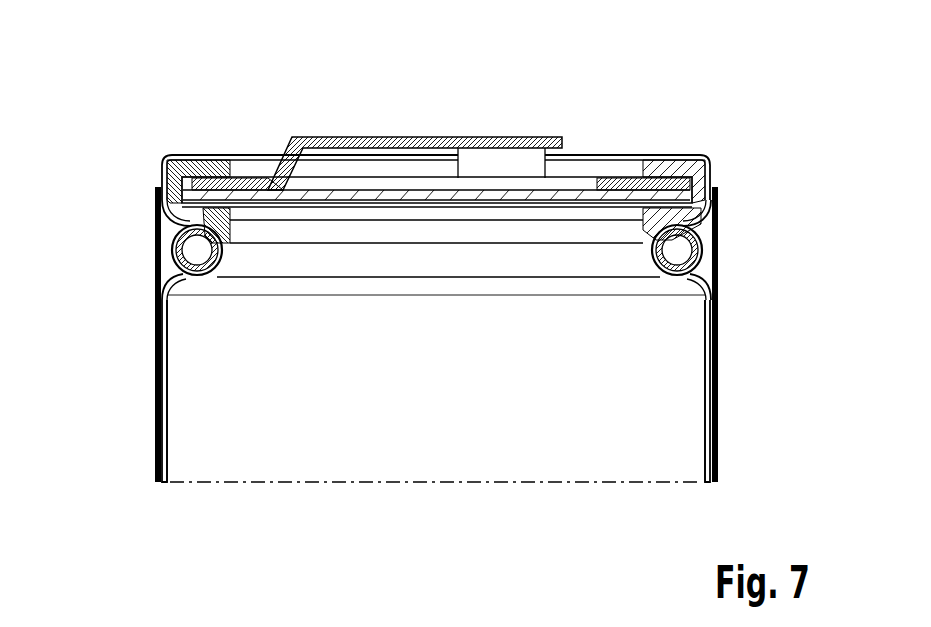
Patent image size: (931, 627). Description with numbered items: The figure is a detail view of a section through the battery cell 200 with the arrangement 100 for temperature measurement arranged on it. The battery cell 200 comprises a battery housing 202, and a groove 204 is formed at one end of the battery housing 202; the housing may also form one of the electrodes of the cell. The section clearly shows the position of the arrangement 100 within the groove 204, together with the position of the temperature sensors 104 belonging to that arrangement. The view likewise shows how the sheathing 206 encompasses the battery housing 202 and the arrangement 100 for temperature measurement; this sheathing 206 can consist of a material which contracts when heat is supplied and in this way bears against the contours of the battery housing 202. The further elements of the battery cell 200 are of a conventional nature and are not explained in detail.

The battery cell 200 is at (170, 101).
The battery housing 202 is at (707, 450).
The groove 204 is at (217, 267).
The sheathing 206 is at (155, 347).
The temperature sensors 104 is at (188, 252).
The arrangement for temperature measurement 100 is at (711, 273).